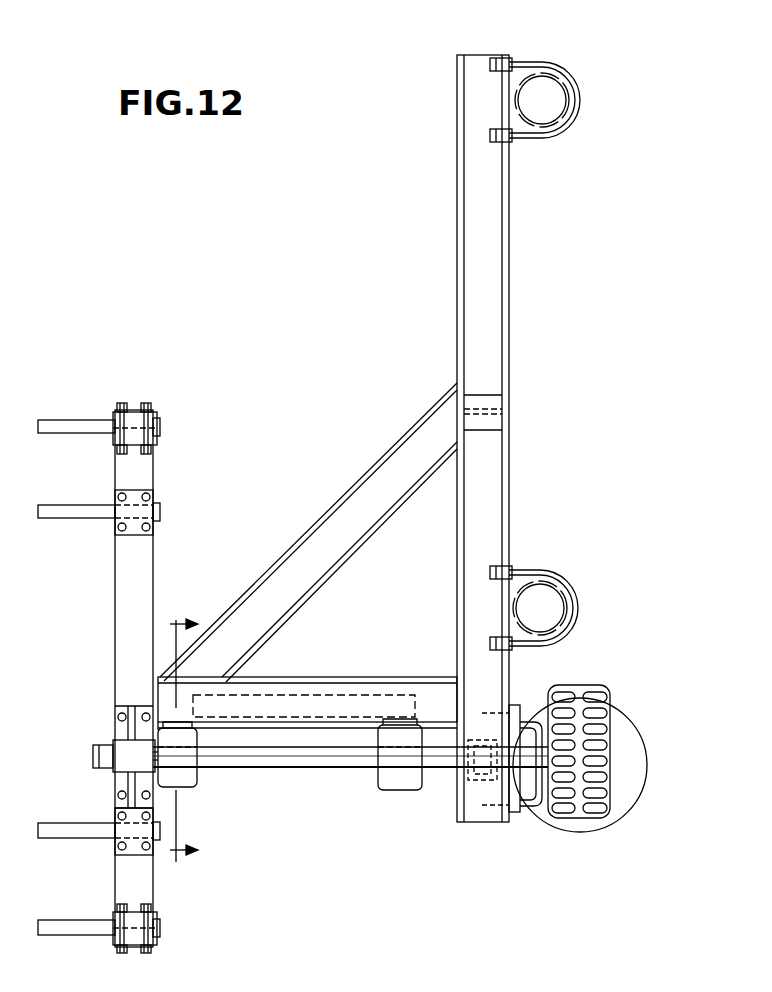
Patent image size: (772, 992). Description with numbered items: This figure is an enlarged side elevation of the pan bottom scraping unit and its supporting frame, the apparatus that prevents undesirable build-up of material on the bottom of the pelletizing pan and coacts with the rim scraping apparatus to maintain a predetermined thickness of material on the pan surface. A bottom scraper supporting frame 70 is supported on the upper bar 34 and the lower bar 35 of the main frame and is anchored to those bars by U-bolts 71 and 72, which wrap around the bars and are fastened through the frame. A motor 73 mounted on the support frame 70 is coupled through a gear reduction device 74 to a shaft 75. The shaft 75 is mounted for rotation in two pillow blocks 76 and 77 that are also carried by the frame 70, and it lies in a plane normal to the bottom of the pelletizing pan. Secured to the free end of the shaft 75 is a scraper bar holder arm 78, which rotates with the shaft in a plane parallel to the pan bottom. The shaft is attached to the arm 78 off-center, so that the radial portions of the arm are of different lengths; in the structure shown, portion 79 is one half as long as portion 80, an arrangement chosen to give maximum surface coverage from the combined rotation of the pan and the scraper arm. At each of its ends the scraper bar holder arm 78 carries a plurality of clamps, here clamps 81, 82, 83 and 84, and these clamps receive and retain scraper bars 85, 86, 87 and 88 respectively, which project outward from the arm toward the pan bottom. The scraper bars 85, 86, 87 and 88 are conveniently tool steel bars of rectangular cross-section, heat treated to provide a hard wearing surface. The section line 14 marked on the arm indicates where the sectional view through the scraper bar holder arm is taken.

The section line 14- 14 is at (189, 739).
The upper bar 34 is at (558, 132).
The lower bar 35 is at (566, 588).
The bottom scraper supporting frame 70 is at (514, 484).
The U-bolt 71 is at (520, 62).
The U-bolt 72 is at (520, 568).
The motor 73 is at (615, 710).
The gear reduction device 74 is at (578, 820).
The shaft 75 is at (284, 772).
The pillow block 76 is at (196, 782).
The pillow block 77 is at (404, 792).
The scraper bar holder arm 78 is at (113, 648).
The portion of the scraper bar holder arm 79 is at (148, 878).
The portion of the scraper bar holder arm 80 is at (146, 575).
The clamp 81 is at (134, 954).
The clamp 82 is at (150, 818).
The clamp 83 is at (152, 500).
The clamp 84 is at (157, 415).
The scraper bar 85 is at (65, 937).
The scraper bar 86 is at (66, 840).
The scraper bar 87 is at (83, 520).
The scraper bar 88 is at (66, 434).